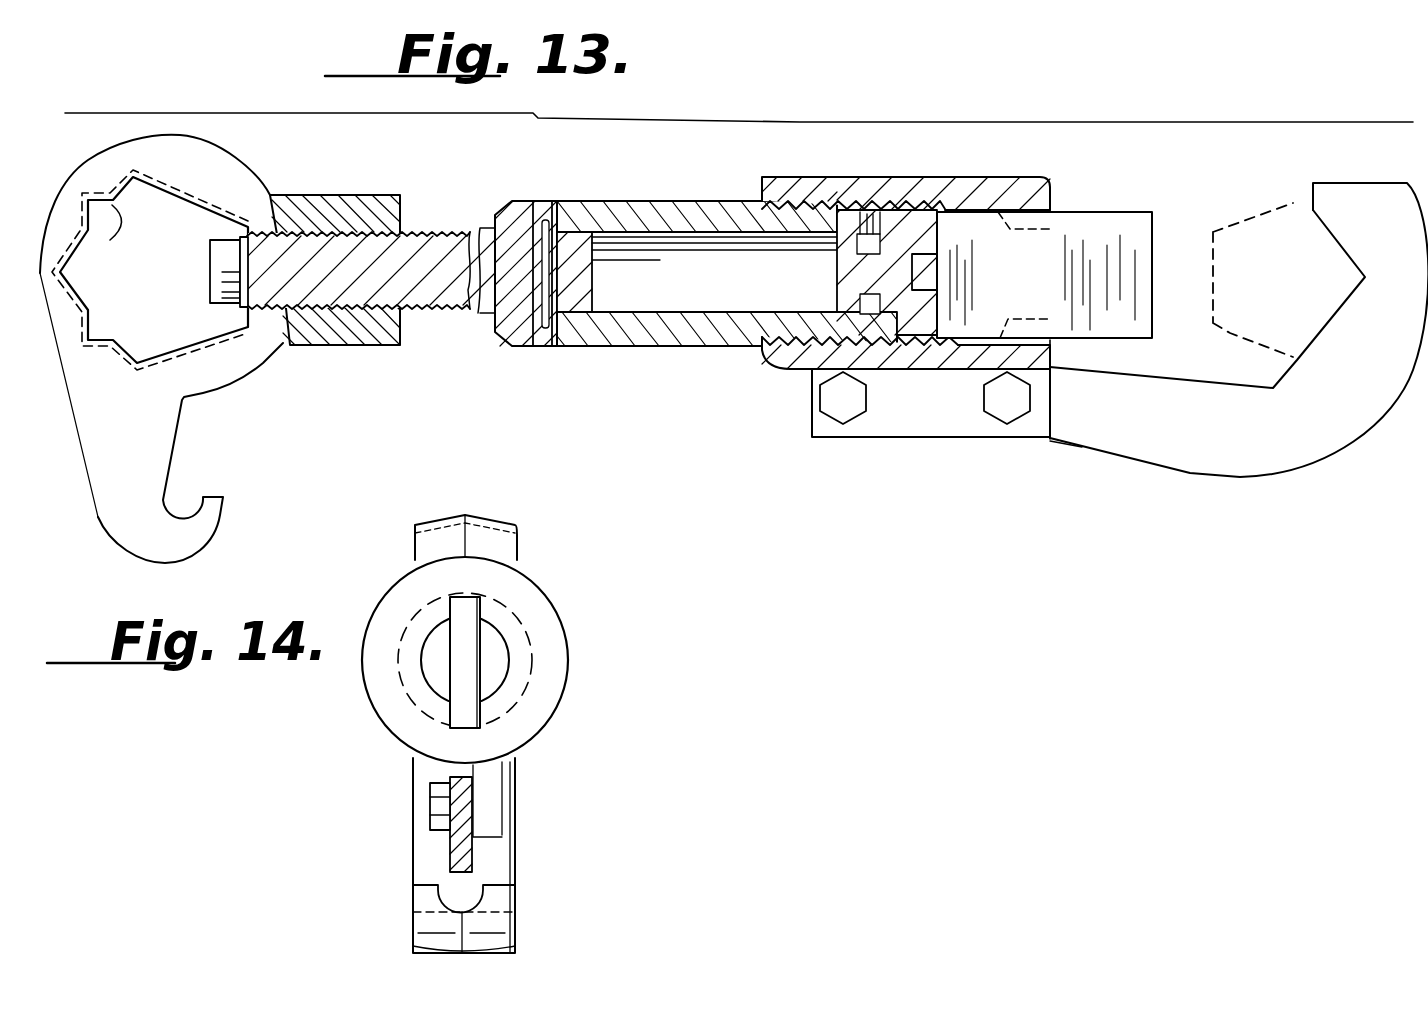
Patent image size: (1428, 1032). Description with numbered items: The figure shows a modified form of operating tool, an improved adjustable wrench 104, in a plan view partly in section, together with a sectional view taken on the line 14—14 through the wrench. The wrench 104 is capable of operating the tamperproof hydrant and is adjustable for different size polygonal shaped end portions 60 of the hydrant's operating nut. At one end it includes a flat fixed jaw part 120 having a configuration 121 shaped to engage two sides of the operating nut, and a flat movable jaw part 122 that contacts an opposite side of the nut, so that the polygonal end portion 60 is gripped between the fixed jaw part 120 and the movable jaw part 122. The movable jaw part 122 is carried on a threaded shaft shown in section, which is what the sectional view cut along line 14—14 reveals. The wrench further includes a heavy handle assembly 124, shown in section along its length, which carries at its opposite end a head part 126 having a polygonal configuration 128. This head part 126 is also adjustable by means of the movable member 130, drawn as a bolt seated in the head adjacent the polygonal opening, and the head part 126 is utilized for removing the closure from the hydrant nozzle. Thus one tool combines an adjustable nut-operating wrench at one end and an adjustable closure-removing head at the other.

In FIG. 13, the head part 126 is at (240, 170).
In FIG. 14, the head part 126 is at (515, 550).
In FIG. 13, the polygonal configuration 128 is at (130, 252).
In FIG. 13, the movable member 130 is at (210, 275).
In FIG. 13, the handle assembly 124 is at (592, 347).
In FIG. 13, the adjustable wrench 104 is at (765, 384).
In FIG. 14, the adjustable wrench 104 is at (585, 627).
In FIG. 13, the movable jaw part 122 is at (1140, 195).
In FIG. 14, the movable jaw part 122 is at (477, 668).
In FIG. 13, the configuration 121 is at (1287, 357).
In FIG. 13, the polygonal shaped end portion 60 is at (1240, 333).
In FIG. 14, the fixed jaw part 120 is at (473, 857).
In FIG. 13, the section line 14- 14 is at (1197, 165).